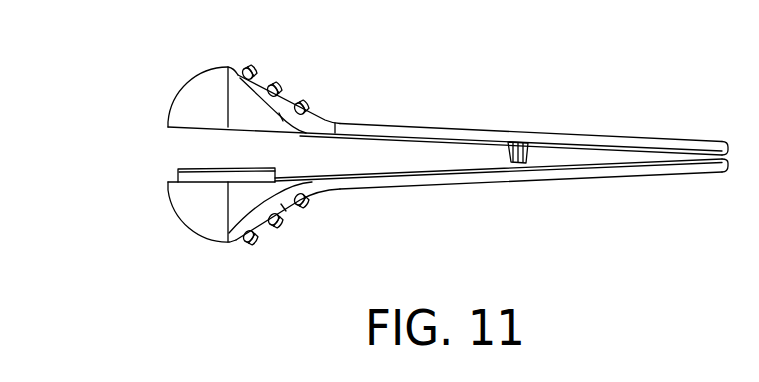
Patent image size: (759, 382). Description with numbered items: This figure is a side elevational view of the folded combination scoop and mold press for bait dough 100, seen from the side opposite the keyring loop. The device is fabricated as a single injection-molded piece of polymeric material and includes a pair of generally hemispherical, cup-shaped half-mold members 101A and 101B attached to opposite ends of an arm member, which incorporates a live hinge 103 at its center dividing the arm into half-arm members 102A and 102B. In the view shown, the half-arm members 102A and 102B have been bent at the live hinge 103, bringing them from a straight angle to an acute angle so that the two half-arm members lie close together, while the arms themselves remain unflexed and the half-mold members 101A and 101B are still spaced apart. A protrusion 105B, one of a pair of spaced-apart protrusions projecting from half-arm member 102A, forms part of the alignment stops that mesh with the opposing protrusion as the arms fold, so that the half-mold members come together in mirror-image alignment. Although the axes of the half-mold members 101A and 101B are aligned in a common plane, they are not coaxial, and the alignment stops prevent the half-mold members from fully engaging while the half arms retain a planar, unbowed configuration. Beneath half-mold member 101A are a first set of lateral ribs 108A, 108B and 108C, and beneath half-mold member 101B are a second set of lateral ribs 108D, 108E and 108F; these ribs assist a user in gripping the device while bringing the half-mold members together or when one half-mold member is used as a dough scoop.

The combination scoop and mold press for bait dough 100 is at (217, 51).
The half-mold member 101A is at (200, 95).
The half-mold member 101B is at (200, 218).
The half-arm member 102A is at (405, 132).
The half-arm member 102B is at (405, 180).
The live hinge 103 is at (736, 143).
The protrusion 105B is at (519, 163).
The lateral rib 108A is at (250, 66).
The lateral rib 108B is at (279, 82).
The lateral rib 108C is at (304, 101).
The lateral rib 108D is at (303, 204).
The lateral rib 108E is at (279, 228).
The lateral rib 108F is at (252, 244).